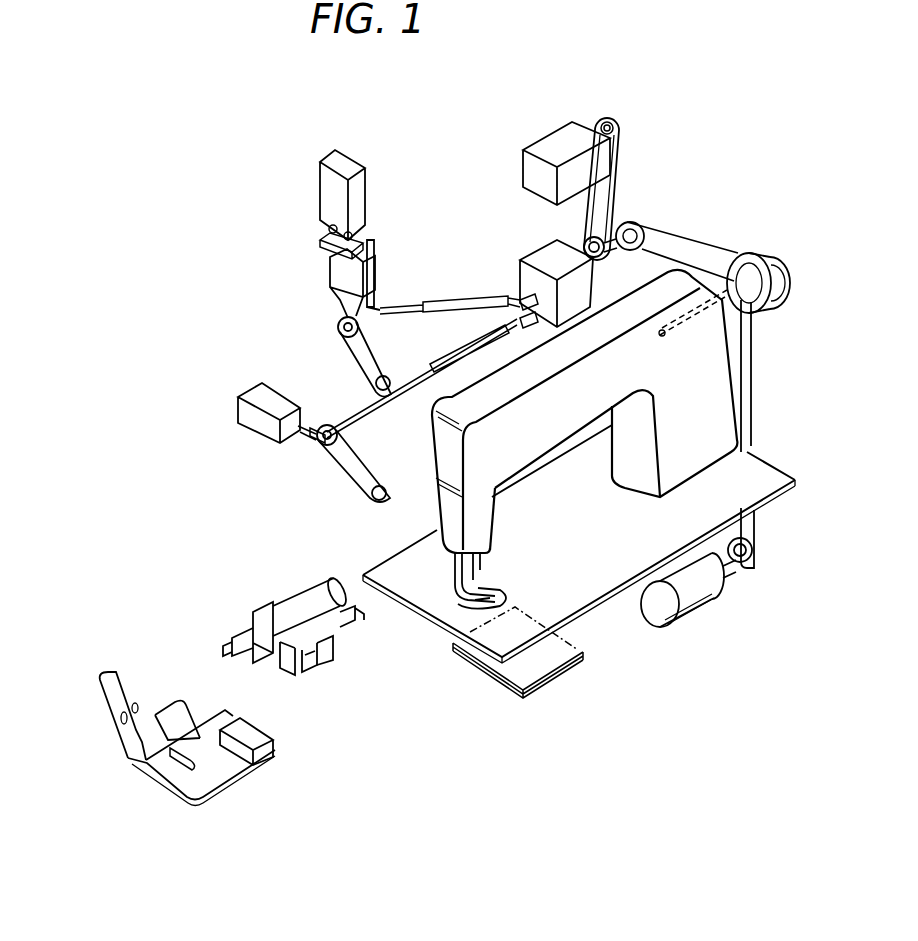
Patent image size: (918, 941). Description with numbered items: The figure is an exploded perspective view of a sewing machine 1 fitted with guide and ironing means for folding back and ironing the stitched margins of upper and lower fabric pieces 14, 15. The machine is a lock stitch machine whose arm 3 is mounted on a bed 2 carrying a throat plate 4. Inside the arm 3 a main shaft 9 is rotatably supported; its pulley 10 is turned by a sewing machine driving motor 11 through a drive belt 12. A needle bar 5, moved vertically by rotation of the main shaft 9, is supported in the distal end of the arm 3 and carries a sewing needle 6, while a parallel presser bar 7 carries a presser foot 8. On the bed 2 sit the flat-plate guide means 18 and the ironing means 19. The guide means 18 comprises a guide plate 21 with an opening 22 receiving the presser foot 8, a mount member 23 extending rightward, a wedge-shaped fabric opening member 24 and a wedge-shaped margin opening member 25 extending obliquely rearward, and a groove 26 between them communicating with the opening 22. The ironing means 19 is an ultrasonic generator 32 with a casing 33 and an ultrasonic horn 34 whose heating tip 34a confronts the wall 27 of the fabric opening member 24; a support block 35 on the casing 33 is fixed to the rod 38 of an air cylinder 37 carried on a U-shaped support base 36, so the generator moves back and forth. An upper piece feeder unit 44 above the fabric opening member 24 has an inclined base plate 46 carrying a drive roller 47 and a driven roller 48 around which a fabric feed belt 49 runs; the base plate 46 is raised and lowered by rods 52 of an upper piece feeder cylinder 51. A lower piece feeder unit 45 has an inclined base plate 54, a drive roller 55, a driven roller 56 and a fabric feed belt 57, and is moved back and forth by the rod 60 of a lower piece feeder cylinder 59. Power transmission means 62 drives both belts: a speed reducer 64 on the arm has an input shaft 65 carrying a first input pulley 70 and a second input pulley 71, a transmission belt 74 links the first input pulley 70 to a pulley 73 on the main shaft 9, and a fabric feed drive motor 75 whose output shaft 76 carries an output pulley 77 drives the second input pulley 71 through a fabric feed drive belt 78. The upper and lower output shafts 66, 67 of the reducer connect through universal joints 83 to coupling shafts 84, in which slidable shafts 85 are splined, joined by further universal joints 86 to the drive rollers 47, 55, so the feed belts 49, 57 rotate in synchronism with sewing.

The sewing machine 1 is at (389, 276).
The bed 2 is at (612, 582).
The arm 3 is at (445, 520).
The throat plate 4 is at (450, 625).
The needle bar 5 is at (480, 560).
The sewing needle 6 is at (500, 588).
The presser bar 7 is at (455, 565).
The presser foot 8 is at (455, 587).
The main shaft 9 is at (690, 327).
The pulley 10 is at (772, 300).
The sewing machine driving motor 11 is at (702, 600).
The drive belt 12 is at (753, 451).
The upper fabric piece 14 is at (488, 662).
The lower fabric piece 15 is at (518, 690).
The guide means 18 is at (154, 420).
The ironing means 19 is at (268, 593).
The guide plate 21 is at (240, 770).
The opening 22 is at (186, 780).
The mount member 23 is at (266, 752).
The wedge-shaped fabric opening member 24 is at (100, 700).
The wedge-shaped margin opening member 25 is at (178, 720).
The groove 26 is at (145, 740).
The wall 27 is at (125, 697).
The ultrasonic generator 32 is at (301, 587).
The casing 33 is at (333, 595).
The ultrasonic horn 34 is at (232, 646).
The heating tip 34a is at (224, 658).
The support block 35 is at (307, 667).
The support base 36 is at (330, 662).
The air cylinder 37 is at (362, 616).
The rod 38 is at (318, 672).
The upper piece feeder unit 44 is at (315, 296).
The lower piece feeder unit 45 is at (290, 460).
The inclined base plate 46 is at (372, 272).
The drive roller 47 is at (338, 328).
The driven roller 48 is at (376, 384).
The fabric feed belt 49 is at (357, 352).
The upper piece feeder cylinder 51 is at (377, 185).
The rods 52 is at (320, 247).
The inclined base plate 54 is at (384, 475).
The drive roller 55 is at (320, 428).
The driven roller 56 is at (383, 508).
The fabric feed belt 57 is at (348, 468).
The lower piece feeder cylinder 59 is at (250, 394).
The rod 60 is at (318, 444).
The power transmission means 62 is at (640, 144).
The speed reducer 64 is at (530, 250).
The input shaft 65 is at (583, 249).
The upper output shaft 66 is at (520, 288).
The lower output shaft 67 is at (545, 330).
The first input pulley 70 is at (629, 250).
The second input pulley 71 is at (612, 256).
The pulley 73 is at (733, 255).
The transmission belt 74 is at (680, 228).
The fabric feed drive motor 75 is at (545, 124).
The output shaft 76 is at (600, 126).
The output pulley 77 is at (605, 120).
The fabric feed drive belt 78 is at (615, 178).
The universal joints 83 is at (518, 303).
The coupling shafts 84 is at (453, 302).
The slidable shafts 85 is at (425, 306).
The universal joints 86 is at (384, 308).